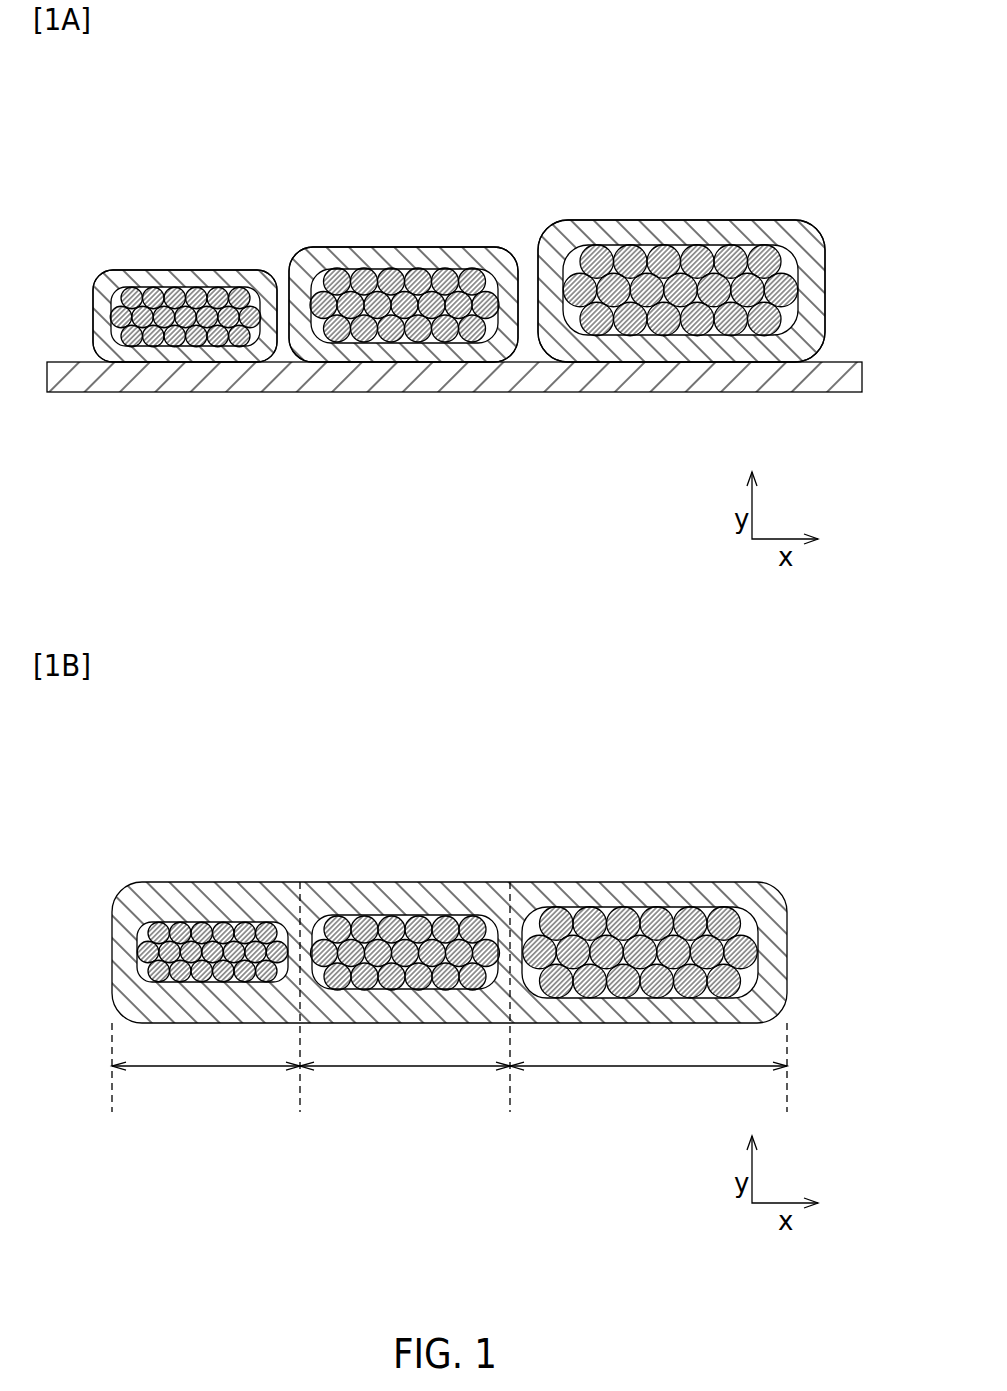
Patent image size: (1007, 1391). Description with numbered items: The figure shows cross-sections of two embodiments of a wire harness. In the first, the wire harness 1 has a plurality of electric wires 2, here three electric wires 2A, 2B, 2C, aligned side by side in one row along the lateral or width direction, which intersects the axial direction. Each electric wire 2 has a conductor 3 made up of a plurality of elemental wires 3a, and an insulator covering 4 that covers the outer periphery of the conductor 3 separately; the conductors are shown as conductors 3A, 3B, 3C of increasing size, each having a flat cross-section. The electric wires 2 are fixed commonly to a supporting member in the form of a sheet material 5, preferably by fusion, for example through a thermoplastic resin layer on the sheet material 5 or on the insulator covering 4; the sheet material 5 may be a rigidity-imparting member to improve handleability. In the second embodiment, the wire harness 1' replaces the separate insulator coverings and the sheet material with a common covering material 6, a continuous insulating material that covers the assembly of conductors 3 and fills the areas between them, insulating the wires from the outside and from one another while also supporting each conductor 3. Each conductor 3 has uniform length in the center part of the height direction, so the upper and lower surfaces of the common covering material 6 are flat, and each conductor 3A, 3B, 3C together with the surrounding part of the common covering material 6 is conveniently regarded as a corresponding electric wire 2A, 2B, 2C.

The wire harness 1 is at (691, 48).
The wire harness 1' is at (692, 693).
The electric wire 2 is at (459, 631).
The electric wire 2A is at (187, 270).
The electric wire 2B is at (403, 247).
The electric wire 2C is at (690, 220).
The conductor 3 is at (467, 590).
The conductor 3A is at (187, 290).
The conductor 3B is at (427, 270).
The conductor 3C is at (712, 247).
The elemental wire 3a is at (130, 295).
The insulator covering 4 is at (102, 327).
The sheet material 5 is at (587, 390).
The common covering material 6 is at (727, 895).